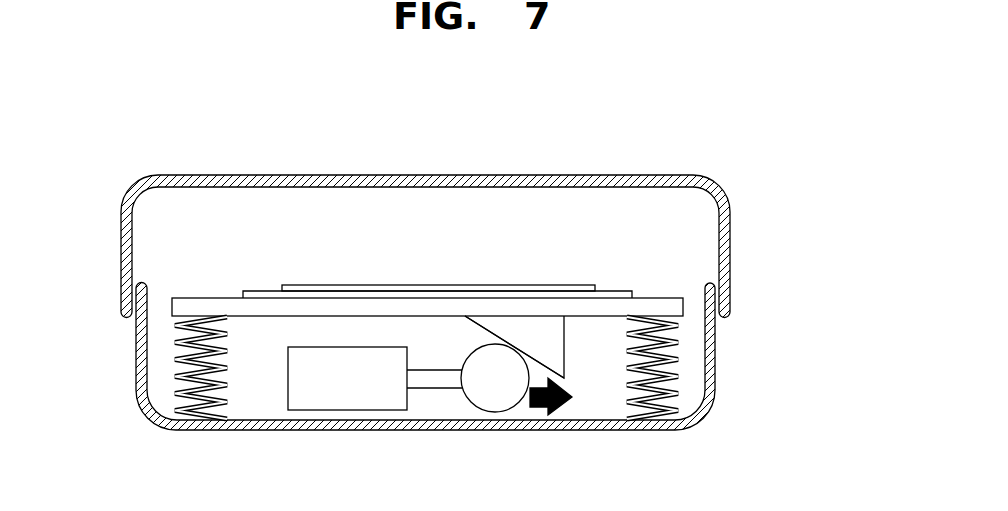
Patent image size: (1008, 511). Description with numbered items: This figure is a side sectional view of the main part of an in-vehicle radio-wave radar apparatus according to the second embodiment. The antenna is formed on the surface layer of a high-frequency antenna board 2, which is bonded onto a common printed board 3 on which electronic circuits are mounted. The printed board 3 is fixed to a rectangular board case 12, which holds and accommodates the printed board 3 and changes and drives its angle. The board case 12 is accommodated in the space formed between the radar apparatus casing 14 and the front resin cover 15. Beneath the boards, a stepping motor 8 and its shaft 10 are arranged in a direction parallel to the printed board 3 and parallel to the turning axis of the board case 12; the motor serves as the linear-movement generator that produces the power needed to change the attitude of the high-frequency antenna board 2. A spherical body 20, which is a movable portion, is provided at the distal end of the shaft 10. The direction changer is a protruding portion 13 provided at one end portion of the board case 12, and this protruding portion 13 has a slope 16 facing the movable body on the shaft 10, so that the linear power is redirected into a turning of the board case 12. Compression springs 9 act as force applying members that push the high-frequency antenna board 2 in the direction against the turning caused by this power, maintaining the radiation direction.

The high-frequency antenna board 2 is at (505, 288).
The printed board 3 is at (610, 293).
The stepping motor 8 is at (320, 397).
The compression spring 9 is at (176, 362).
The shaft 10 is at (425, 382).
The board case 12 is at (665, 307).
The protruding portion 13 is at (555, 351).
The radar apparatus casing 14 is at (698, 418).
The front resin cover 15 is at (730, 237).
The slope 16 is at (478, 333).
The spherical body 20 is at (495, 400).